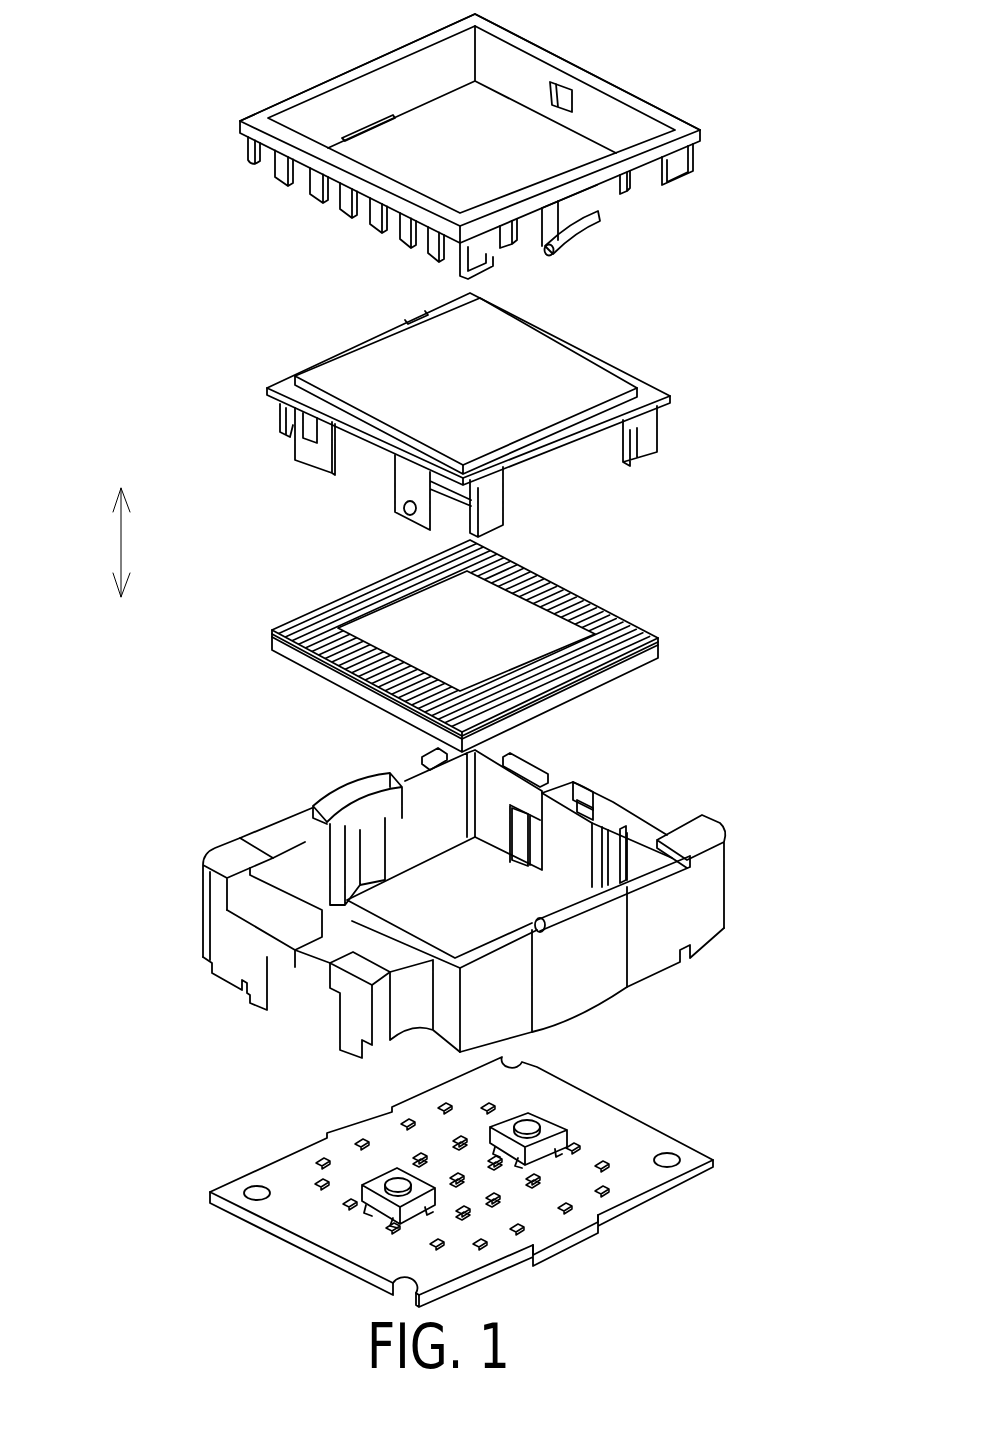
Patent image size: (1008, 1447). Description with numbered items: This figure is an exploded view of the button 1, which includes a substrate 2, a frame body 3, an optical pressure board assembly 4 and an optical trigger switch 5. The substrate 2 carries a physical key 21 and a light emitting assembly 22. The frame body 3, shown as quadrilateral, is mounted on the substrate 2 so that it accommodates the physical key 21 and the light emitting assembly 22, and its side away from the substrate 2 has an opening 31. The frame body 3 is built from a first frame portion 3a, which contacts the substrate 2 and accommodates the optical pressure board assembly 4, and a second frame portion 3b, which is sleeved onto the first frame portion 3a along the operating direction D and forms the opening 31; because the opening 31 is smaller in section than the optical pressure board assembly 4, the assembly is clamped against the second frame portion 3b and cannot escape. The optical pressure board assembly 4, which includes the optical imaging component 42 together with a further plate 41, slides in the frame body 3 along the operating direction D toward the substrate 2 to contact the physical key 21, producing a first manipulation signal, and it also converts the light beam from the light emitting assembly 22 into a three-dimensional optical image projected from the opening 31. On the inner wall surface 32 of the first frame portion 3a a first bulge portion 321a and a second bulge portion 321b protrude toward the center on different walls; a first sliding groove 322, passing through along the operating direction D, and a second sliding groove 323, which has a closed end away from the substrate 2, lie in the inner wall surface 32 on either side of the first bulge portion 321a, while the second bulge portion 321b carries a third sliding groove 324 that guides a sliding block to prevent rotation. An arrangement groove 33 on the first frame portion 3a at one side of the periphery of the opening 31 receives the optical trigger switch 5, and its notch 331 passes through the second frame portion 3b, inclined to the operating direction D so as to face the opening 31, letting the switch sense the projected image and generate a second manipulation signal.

The button 1 is at (131, 61).
The substrate 2 is at (716, 1166).
The physical key 21 is at (547, 1118).
The light emitting assembly 22 is at (606, 1192).
The frame body 3 is at (518, 529).
The first frame portion 3a is at (703, 830).
The second frame portion 3b is at (672, 128).
The opening 31 is at (567, 38).
The inner wall surface 32 is at (290, 852).
The first bulge portion 321a is at (617, 903).
The second bulge portion 321b is at (343, 826).
The first sliding groove 322 is at (623, 832).
The second sliding groove 323 is at (528, 832).
The third sliding groove 324 is at (371, 872).
The arrangement groove 33 is at (578, 798).
The notch 331 is at (567, 88).
The optical pressure board assembly 4 is at (733, 352).
The cover plate 41 is at (646, 390).
The optical imaging component 42 is at (656, 650).
The optical trigger switch 5 is at (592, 805).
The operating direction D is at (111, 542).